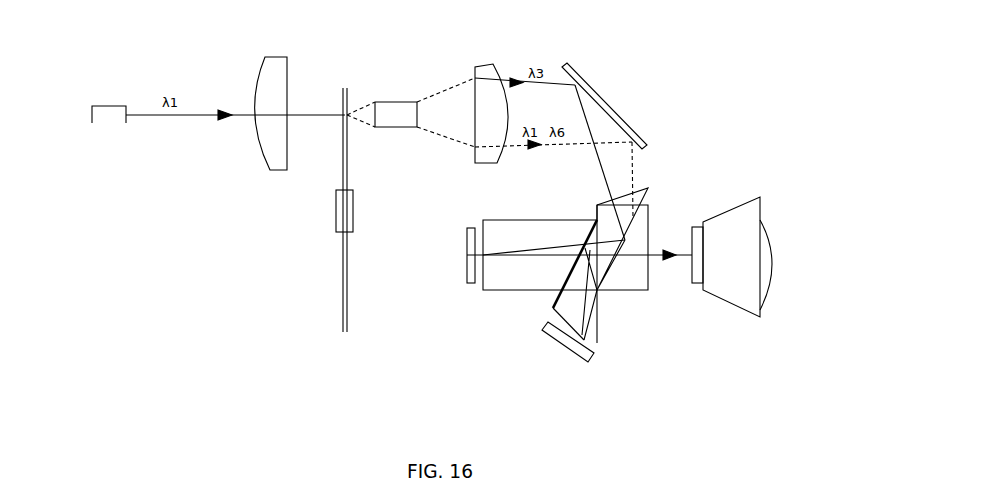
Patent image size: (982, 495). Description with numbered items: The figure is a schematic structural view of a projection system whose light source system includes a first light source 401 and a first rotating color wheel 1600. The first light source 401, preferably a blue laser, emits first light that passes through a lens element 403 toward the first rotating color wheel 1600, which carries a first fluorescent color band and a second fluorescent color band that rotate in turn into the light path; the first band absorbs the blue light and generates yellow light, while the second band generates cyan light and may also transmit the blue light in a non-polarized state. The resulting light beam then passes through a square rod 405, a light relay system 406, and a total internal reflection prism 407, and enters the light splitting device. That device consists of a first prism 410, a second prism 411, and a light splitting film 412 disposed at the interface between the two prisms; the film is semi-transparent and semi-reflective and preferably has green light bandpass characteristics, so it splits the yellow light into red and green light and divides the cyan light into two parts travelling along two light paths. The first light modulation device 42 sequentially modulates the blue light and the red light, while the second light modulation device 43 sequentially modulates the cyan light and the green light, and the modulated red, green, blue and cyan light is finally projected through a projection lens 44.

The first light source 401 is at (102, 117).
The collimating lens 403 is at (282, 65).
The square rod 405 is at (403, 102).
The first rotating color wheel 1600 is at (345, 307).
The light relay system 406 is at (483, 67).
The first prism 410 is at (538, 220).
The first light modulation device 42 is at (473, 283).
The light splitting film 412 is at (557, 300).
The second prism 411 is at (597, 338).
The total internal reflection (TIR) prism 407 is at (642, 193).
The second light modulation device 43 is at (572, 350).
The projection lens 44 is at (772, 273).